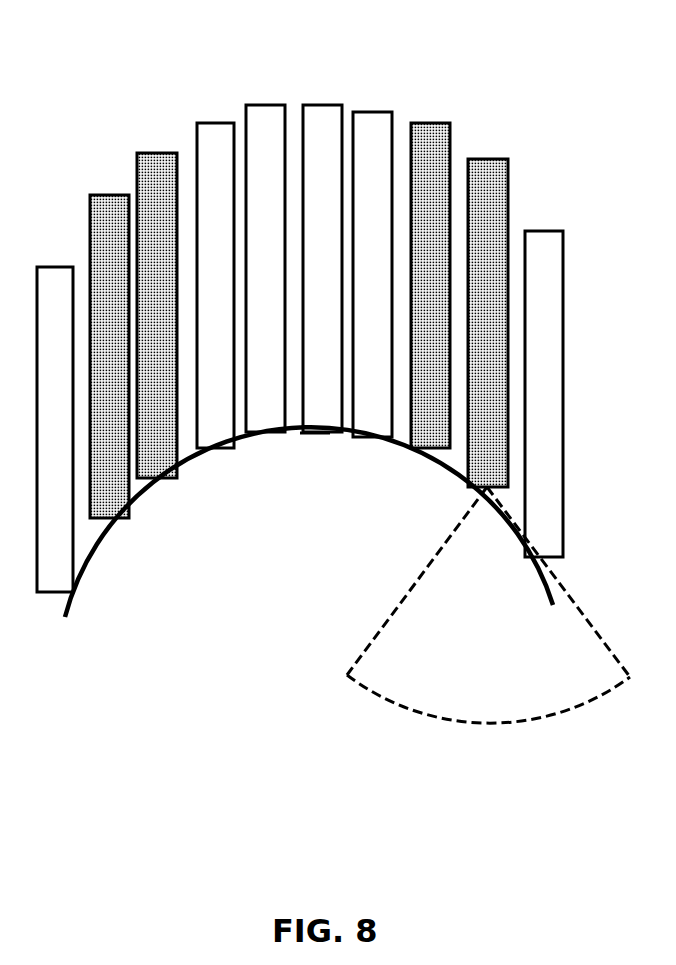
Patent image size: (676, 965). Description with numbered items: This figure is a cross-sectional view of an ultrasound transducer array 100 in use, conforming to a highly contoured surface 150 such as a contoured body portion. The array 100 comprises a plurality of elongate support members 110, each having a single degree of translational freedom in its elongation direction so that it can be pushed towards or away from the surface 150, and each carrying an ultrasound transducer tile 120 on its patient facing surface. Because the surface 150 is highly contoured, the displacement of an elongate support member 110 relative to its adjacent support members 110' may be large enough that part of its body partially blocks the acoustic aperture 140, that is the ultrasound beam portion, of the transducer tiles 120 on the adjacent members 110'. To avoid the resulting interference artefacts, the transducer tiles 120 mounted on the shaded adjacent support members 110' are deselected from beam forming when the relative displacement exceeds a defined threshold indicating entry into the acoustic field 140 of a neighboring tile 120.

The ultrasound transducer array 100 is at (333, 461).
The elongate support member 110 is at (555, 332).
The adjacent elongate support member 110' is at (499, 260).
The ultrasound transducer tile 120 is at (213, 450).
The acoustic aperture 140 is at (500, 698).
The contoured surface 150 is at (313, 433).